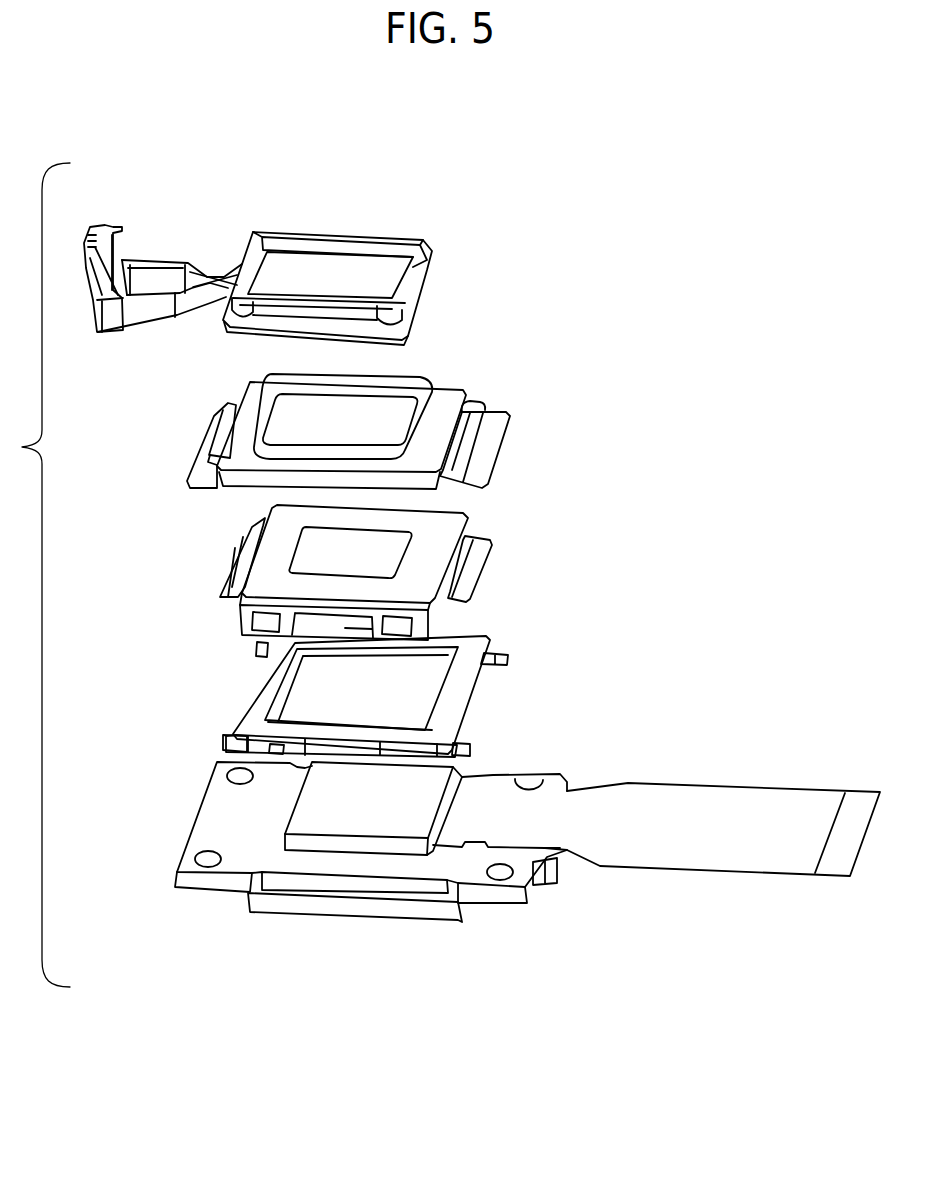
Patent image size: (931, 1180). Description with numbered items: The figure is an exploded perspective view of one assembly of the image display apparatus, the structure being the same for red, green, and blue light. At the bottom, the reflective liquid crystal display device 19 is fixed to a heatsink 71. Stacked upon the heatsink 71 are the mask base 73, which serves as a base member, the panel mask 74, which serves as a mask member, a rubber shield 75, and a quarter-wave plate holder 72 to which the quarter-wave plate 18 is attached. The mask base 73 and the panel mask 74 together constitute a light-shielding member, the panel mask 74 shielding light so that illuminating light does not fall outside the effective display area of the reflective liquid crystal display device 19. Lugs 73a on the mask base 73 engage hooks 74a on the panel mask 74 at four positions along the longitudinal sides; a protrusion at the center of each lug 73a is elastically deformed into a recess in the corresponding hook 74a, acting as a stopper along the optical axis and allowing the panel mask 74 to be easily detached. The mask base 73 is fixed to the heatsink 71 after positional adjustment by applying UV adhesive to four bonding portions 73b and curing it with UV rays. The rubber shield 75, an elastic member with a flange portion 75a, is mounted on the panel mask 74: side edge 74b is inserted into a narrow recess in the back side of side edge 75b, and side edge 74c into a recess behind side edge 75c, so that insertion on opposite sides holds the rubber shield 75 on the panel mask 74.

The quarter-wave plate 18 is at (316, 270).
The quarter-wave plate holder 72 is at (432, 250).
The rubber shield 75 is at (468, 407).
The flange portion 75a is at (416, 404).
The side edge 75b is at (220, 438).
The side edge 75c is at (487, 444).
The panel mask 74 is at (436, 536).
The hook 74a is at (256, 618).
The side edge 74b is at (240, 555).
The side edge 74c is at (472, 577).
The mask base 73 is at (473, 651).
The lug 73a is at (279, 744).
The bonding portion 73b is at (227, 735).
The heatsink 71 is at (223, 810).
The reflective liquid crystal display device 19 is at (398, 818).